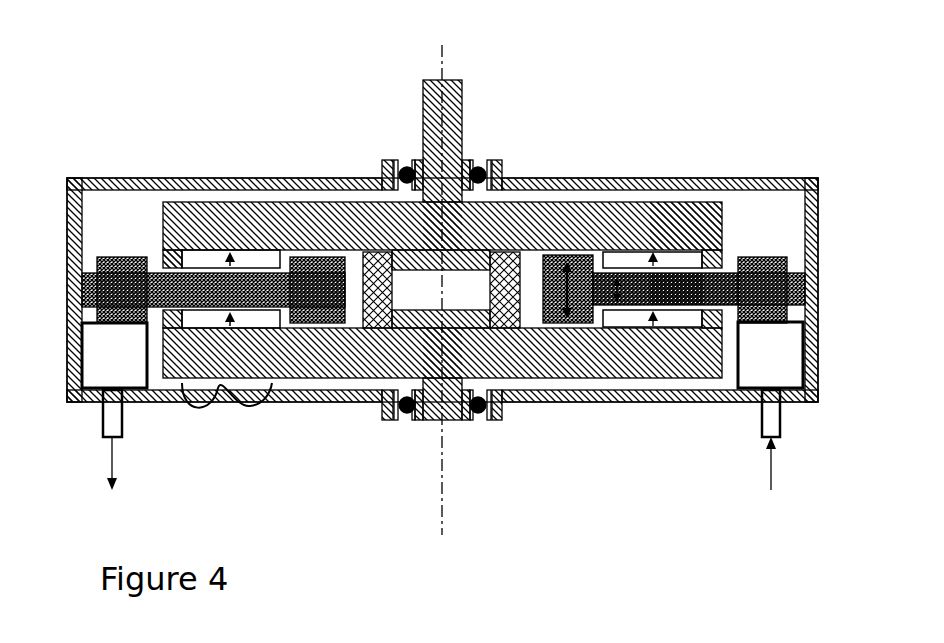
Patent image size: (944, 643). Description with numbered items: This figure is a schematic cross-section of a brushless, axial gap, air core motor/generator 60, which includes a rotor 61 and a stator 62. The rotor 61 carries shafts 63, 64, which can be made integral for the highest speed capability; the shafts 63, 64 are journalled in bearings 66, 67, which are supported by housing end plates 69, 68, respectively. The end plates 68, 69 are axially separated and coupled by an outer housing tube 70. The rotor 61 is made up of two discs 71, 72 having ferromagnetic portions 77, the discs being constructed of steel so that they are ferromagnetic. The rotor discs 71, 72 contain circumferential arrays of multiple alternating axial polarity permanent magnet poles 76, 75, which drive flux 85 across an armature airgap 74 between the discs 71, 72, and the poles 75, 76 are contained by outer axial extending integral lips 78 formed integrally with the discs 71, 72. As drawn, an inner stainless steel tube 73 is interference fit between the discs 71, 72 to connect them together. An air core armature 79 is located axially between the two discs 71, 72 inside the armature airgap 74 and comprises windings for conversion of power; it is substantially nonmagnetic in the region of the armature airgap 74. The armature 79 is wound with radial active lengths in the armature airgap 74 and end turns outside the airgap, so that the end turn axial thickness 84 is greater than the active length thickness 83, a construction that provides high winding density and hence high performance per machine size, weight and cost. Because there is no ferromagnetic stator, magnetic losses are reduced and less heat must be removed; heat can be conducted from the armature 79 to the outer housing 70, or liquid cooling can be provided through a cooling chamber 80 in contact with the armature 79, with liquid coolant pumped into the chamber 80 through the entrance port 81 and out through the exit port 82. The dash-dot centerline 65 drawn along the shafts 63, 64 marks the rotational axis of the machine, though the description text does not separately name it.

The motor/generator 60 is at (143, 50).
The rotor 61 is at (728, 210).
The stator 62 is at (824, 240).
The shaft 63 is at (464, 124).
The shaft 64 is at (452, 422).
The central axis 65 is at (443, 500).
The bearing 66 is at (400, 160).
The bearing 67 is at (412, 420).
The housing end plate 68 is at (573, 403).
The housing end plate 69 is at (553, 178).
The outer housing tube 70 is at (820, 197).
The rotor disc 71 is at (298, 383).
The rotor disc 72 is at (316, 202).
The inner stainless steel tube 73 is at (396, 292).
The armature airgap 74 is at (728, 264).
The permanent magnet poles 75 is at (652, 263).
The permanent magnet poles 76 is at (652, 320).
The ferromagnetic portions 77 is at (222, 392).
The outer axial extending integral lips 78 is at (162, 255).
The air core armature 79 is at (101, 258).
The cooling chamber 80 is at (147, 382).
The entrance port 81 is at (770, 413).
The exit port 82 is at (122, 450).
The active length thickness 83 is at (598, 302).
The end turn axial thickness 84 is at (546, 282).
The flux 85 is at (696, 306).